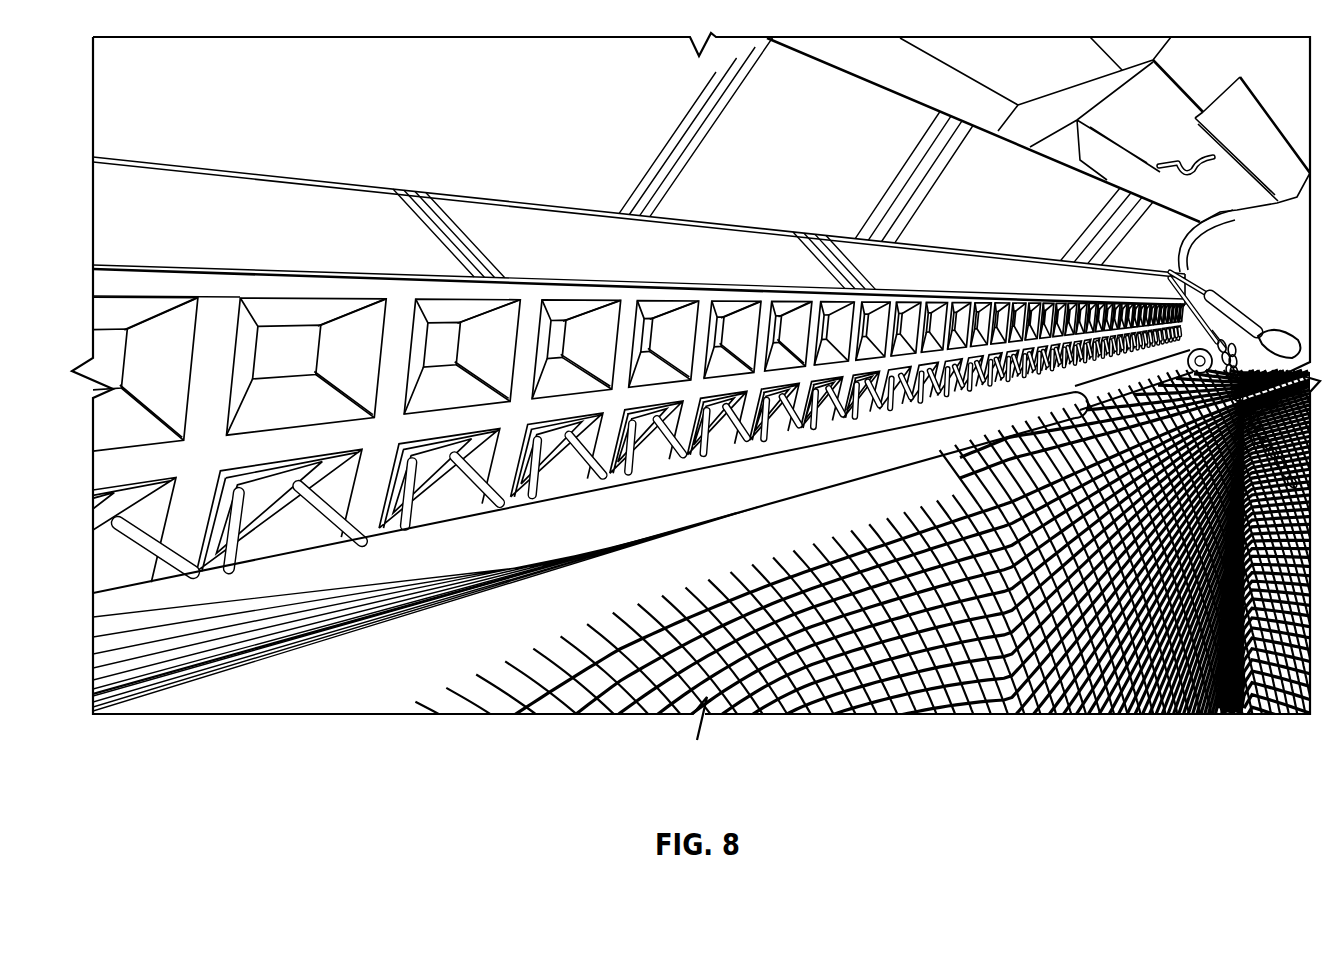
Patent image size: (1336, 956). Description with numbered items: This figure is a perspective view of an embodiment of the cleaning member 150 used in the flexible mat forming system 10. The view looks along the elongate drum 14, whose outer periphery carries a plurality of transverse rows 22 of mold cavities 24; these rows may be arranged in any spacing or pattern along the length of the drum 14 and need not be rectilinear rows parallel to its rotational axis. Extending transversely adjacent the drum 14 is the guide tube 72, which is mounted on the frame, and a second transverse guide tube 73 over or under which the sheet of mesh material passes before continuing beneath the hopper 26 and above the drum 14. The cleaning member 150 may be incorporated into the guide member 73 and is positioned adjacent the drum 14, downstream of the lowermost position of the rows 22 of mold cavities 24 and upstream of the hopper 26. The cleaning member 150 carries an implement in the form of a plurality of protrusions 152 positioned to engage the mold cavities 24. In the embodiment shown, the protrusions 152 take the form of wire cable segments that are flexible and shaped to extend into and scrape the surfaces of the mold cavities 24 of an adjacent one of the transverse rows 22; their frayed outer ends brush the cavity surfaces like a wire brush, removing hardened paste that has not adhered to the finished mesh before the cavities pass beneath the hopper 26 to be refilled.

The flexible mat forming system 10 is at (406, 732).
The drum 14 is at (530, 318).
The transverse rows 22 is at (752, 318).
The mold cavities 24 is at (433, 473).
The hopper 26 is at (878, 135).
The guide tube 72 is at (830, 708).
The second transverse guide tube 73 is at (848, 457).
The cleaning member 150 is at (517, 555).
The protrusions 152 is at (193, 563).